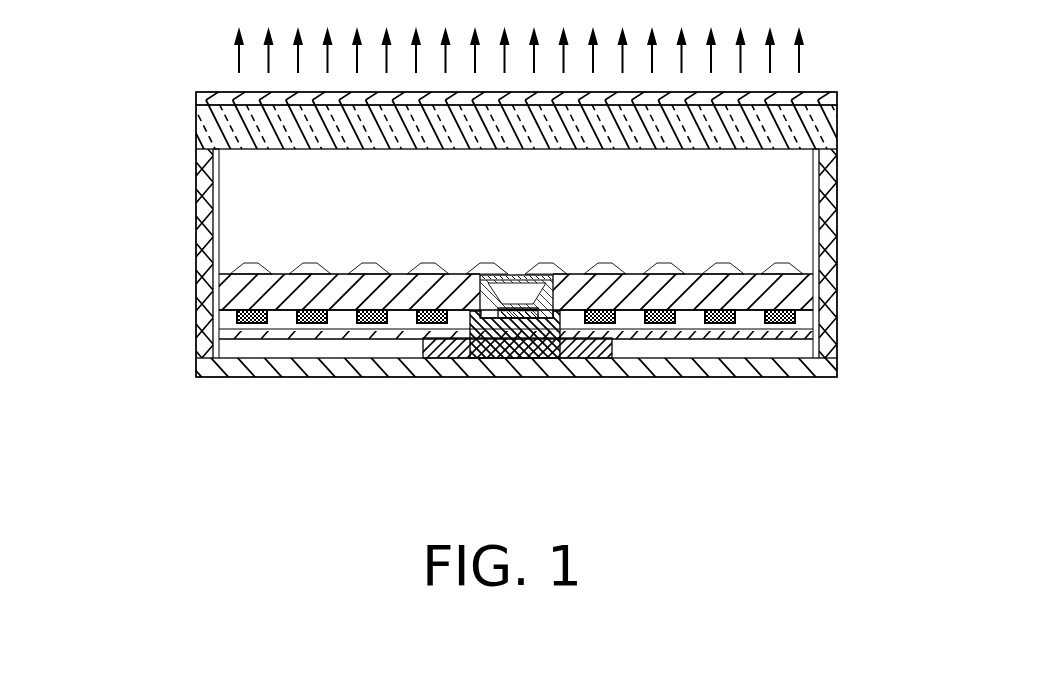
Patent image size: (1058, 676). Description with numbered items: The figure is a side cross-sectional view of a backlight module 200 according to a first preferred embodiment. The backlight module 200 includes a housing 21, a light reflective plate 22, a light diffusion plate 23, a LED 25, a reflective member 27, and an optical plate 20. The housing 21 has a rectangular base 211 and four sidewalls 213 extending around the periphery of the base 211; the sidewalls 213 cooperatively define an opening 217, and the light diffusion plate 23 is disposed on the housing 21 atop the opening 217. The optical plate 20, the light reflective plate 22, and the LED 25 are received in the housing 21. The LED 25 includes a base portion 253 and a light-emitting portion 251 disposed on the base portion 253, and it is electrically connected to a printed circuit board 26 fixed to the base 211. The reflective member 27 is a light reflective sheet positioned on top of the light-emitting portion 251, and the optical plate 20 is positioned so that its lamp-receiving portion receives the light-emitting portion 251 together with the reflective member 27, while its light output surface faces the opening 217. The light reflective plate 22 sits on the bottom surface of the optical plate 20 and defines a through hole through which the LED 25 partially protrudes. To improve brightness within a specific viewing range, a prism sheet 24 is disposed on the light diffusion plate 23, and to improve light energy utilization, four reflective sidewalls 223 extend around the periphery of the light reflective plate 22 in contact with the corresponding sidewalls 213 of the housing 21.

The backlight module 200 is at (176, 63).
The prism sheet 24 is at (808, 97).
The light diffusion plate 23 is at (830, 129).
The opening 217 is at (800, 177).
The reflective sidewalls 223 is at (816, 206).
The optical plate 20 is at (803, 297).
The light reflective plate 22 is at (805, 333).
The reflective member 27 is at (517, 274).
The housing 21 is at (456, 350).
The sidewalls 213 is at (217, 311).
The base 211 is at (237, 368).
The printed circuit board 26 is at (430, 345).
The LED 25 is at (510, 391).
The light-emitting portion 251 is at (496, 294).
The base portion 253 is at (516, 320).